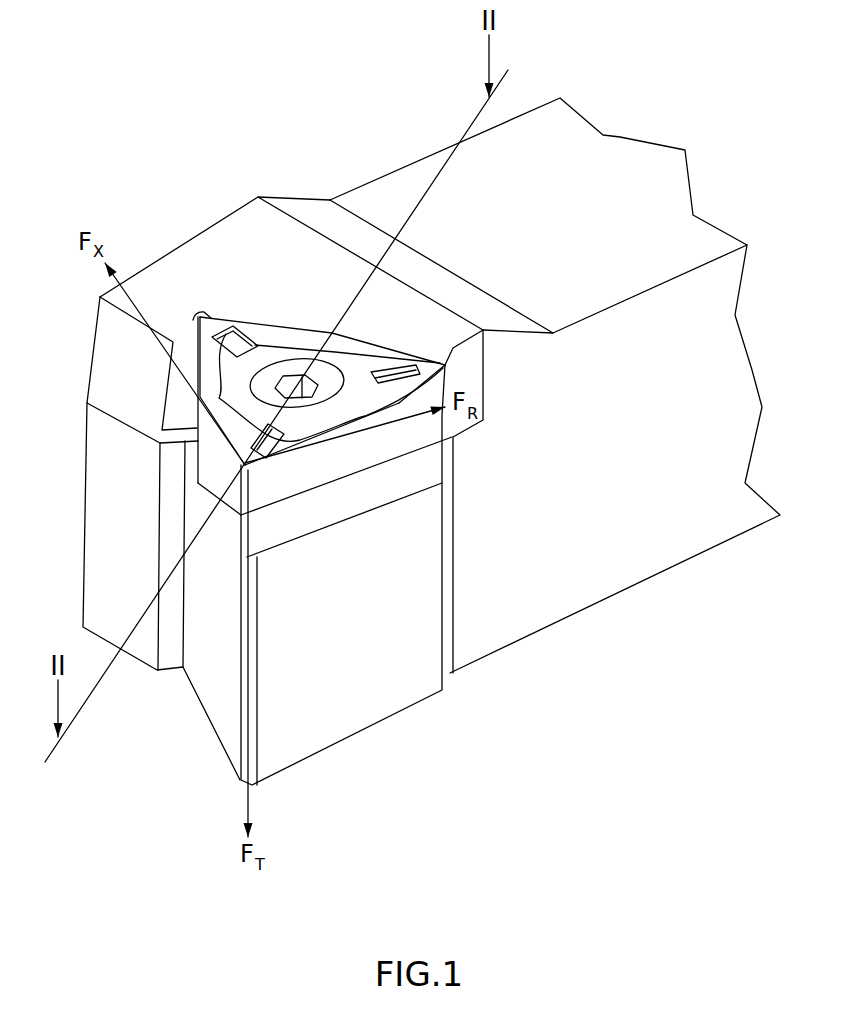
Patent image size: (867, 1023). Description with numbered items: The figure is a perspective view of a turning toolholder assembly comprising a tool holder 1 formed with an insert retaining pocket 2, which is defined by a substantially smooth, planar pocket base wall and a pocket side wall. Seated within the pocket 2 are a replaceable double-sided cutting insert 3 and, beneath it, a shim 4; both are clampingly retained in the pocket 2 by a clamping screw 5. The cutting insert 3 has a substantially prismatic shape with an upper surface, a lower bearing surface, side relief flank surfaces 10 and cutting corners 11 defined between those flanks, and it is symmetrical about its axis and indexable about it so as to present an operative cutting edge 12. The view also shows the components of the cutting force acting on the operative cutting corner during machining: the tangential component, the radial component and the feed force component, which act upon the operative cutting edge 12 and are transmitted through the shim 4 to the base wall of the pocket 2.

The tool holder 1 is at (535, 147).
The insert retaining pocket 2 is at (190, 200).
The cutting insert 3 is at (258, 330).
The shim 4 is at (385, 483).
The clamping screw 5 is at (293, 367).
The side relief flank surface 10 is at (320, 467).
The cutting corner 11 is at (220, 450).
The operative cutting edge 12 is at (283, 453).